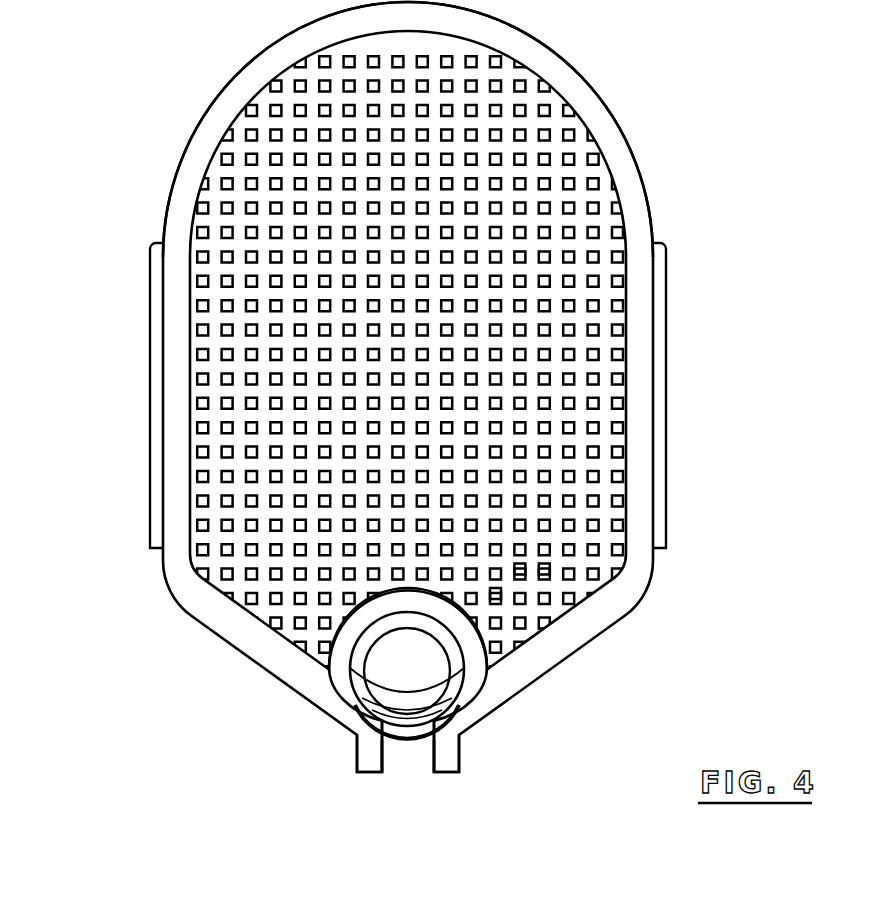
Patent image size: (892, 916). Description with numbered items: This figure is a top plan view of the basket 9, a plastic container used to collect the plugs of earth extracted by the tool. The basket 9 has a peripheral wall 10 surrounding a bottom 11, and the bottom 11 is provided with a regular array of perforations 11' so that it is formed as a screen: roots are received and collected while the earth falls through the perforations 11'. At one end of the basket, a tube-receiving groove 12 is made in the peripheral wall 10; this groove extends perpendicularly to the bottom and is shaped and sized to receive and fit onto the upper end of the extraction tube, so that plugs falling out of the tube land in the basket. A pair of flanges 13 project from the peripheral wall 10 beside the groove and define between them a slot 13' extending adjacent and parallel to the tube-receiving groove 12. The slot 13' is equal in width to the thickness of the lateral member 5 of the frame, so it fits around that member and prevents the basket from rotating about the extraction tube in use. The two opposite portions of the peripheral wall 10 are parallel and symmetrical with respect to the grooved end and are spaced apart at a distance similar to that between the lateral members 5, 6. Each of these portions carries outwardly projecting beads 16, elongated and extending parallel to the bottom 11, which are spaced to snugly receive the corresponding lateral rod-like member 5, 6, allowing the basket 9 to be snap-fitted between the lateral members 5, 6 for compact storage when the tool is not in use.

The basket 9 is at (224, 86).
The peripheral wall 10 is at (627, 180).
The bottom 11 is at (348, 366).
The perforations 11' is at (569, 633).
The tube-receiving groove 12 is at (347, 645).
The flanges 13 is at (401, 747).
The slot 13' is at (447, 790).
The outwardly projecting beads 16 is at (163, 480).
The lateral member 6 is at (135, 360).
The lateral member 5 is at (406, 737).